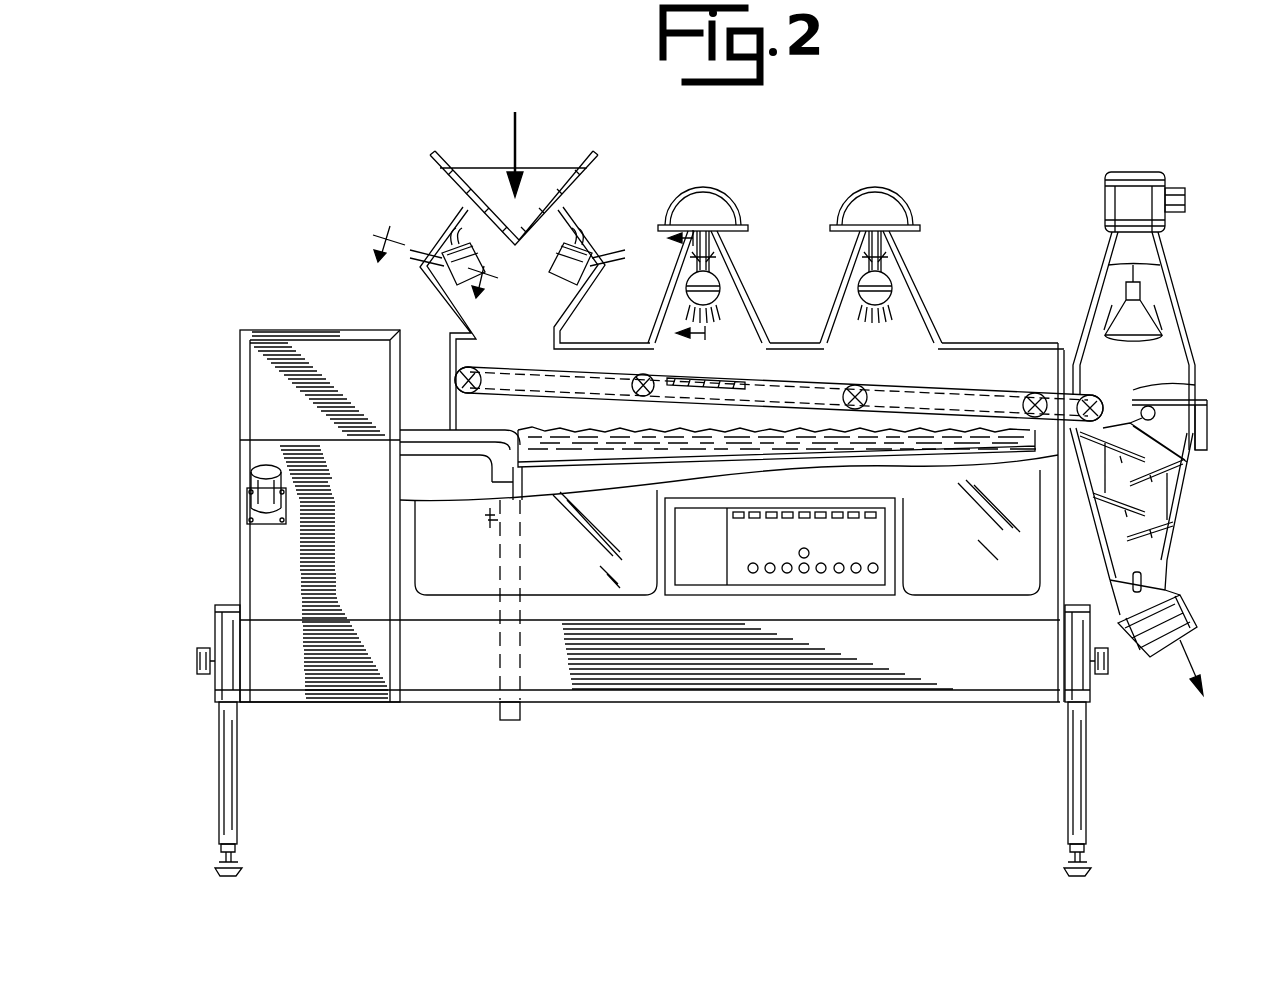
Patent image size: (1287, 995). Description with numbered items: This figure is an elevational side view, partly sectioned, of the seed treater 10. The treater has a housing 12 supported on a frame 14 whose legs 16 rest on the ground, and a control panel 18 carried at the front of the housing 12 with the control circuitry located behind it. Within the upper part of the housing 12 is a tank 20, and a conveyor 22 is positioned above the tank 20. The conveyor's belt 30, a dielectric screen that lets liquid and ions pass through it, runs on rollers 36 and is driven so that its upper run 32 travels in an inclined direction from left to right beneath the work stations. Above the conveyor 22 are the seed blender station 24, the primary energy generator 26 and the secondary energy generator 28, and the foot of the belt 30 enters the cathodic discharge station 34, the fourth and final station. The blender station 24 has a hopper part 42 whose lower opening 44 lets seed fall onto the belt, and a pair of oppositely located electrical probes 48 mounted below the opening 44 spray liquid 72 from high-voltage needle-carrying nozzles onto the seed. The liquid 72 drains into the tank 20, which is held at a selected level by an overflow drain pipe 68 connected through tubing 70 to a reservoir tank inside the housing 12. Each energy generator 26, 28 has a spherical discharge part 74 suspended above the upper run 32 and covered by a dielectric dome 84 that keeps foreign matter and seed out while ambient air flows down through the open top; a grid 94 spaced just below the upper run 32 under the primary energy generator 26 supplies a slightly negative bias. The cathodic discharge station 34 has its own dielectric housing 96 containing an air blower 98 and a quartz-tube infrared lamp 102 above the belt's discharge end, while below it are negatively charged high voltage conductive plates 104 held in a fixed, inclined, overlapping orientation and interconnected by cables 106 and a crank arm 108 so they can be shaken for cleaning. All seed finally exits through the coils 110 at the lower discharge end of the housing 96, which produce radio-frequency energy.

The seed treater 10 is at (265, 293).
The housing 12 is at (268, 558).
The frame 14 is at (433, 703).
The legs 16 is at (240, 773).
The control panel 18 is at (836, 580).
The tank 20 is at (777, 456).
The conveyor 22 is at (683, 408).
The seed blender station 24 is at (493, 214).
The primary energy generator 26 is at (733, 170).
The secondary energy generator 28 is at (894, 189).
The belt 30 is at (583, 395).
The upper run 32 is at (779, 383).
The cathodic discharge station 34 is at (1162, 430).
The rollers 36 is at (485, 372).
The hopper part 42 is at (472, 170).
The lower opening 44 is at (520, 250).
The electrical probes 48 is at (458, 245).
The overflow drain pipe 68 is at (501, 436).
The tubing 70 is at (457, 452).
The liquid 72 is at (734, 446).
The spherical discharge part 74 is at (724, 302).
The dielectric dome 84 is at (682, 210).
The grid 94 is at (740, 381).
The housing 96 is at (1197, 366).
The air blower 98 is at (1168, 180).
The quartz-tube infrared lamp 102 is at (1113, 338).
The high voltage conductive plates 104 is at (1180, 527).
The cables 106 is at (1180, 488).
The crank arm 108 is at (1156, 421).
The coils 110 is at (1156, 652).